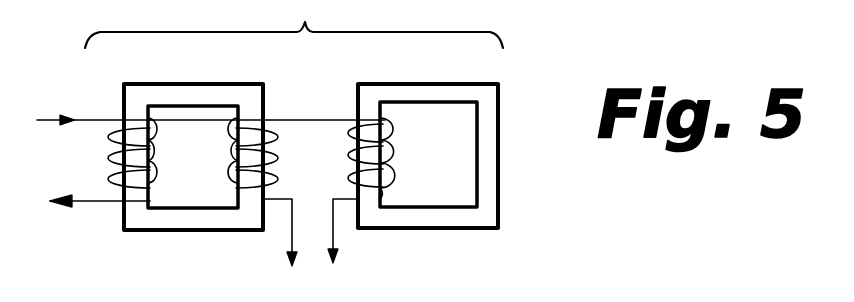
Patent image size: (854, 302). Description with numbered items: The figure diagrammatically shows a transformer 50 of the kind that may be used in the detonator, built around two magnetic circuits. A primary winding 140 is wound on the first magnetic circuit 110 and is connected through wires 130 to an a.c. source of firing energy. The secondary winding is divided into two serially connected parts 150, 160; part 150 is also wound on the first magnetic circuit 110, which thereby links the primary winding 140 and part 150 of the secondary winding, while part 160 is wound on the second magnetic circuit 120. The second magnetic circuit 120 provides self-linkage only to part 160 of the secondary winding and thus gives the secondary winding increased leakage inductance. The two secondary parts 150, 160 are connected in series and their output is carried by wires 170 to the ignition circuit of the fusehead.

The transformer 50 is at (304, 20).
The first magnetic circuit 110 is at (229, 68).
The second magnetic circuit 120 is at (438, 88).
The wires 130 is at (65, 122).
The primary winding 140 is at (188, 165).
The part of secondary winding 150 is at (220, 138).
The part of secondary winding 160 is at (397, 170).
The wires 170 is at (310, 255).